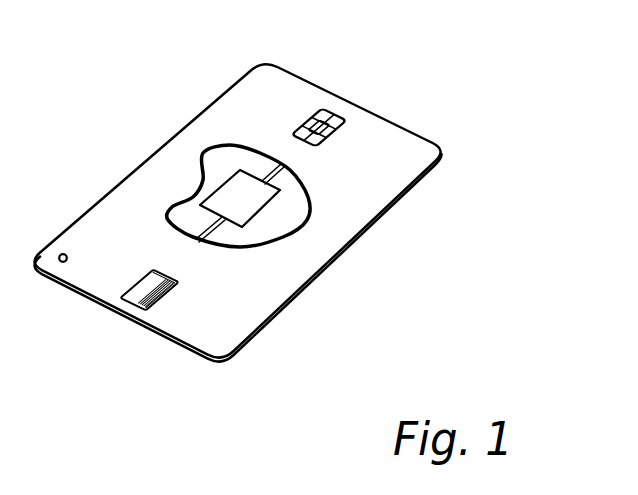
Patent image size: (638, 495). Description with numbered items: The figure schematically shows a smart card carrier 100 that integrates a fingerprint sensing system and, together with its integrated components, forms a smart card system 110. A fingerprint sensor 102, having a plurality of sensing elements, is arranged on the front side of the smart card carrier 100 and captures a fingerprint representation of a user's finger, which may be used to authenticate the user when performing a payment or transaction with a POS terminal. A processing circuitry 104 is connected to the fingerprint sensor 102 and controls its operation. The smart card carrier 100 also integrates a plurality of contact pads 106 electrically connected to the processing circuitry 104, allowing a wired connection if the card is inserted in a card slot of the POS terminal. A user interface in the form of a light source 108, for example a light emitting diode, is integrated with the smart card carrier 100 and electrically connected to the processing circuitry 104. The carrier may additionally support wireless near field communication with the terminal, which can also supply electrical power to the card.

The smart card carrier 100 is at (323, 268).
The fingerprint sensor 102 is at (167, 297).
The processing circuitry 104 is at (228, 183).
The contact pads 106 is at (337, 130).
The light source 108 is at (63, 254).
The smart card system 110 is at (468, 78).